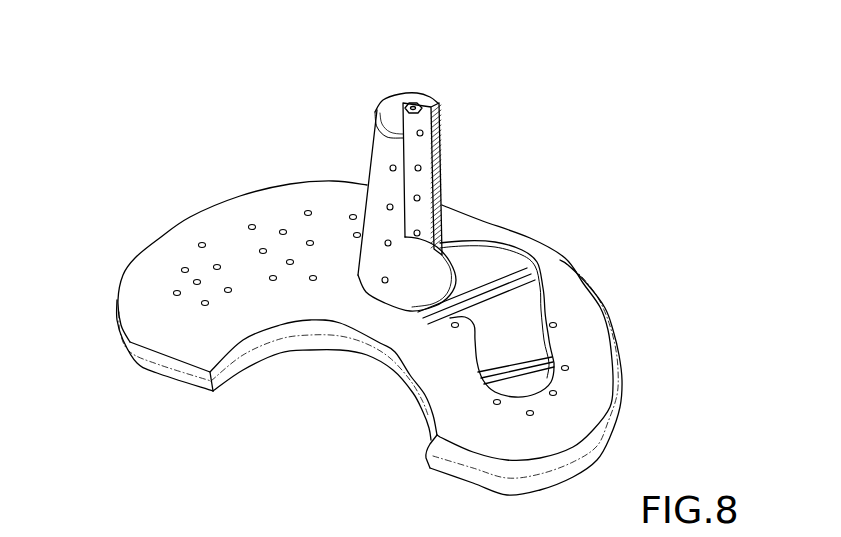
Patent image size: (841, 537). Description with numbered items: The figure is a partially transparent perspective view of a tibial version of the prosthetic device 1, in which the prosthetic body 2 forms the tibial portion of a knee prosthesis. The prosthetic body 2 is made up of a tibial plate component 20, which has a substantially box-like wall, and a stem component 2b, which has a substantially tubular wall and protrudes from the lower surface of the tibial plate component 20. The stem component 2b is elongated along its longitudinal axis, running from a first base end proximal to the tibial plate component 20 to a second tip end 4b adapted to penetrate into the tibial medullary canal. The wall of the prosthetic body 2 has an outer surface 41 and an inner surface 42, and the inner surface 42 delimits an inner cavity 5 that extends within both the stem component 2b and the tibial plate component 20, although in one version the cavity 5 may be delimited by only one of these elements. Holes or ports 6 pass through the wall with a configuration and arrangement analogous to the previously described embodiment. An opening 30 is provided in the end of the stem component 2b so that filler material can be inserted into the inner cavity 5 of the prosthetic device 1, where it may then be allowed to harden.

The prosthetic device 1 is at (376, 253).
The prosthetic body 2 is at (525, 338).
The stem component 2b is at (452, 133).
The second tip end 4b is at (411, 143).
The inner cavity 5 is at (430, 157).
The holes or ports 6 is at (378, 170).
The tibial plate component 20 is at (373, 320).
The opening 30 is at (412, 95).
The outer surface 41 is at (192, 230).
The inner surface 42 is at (502, 329).